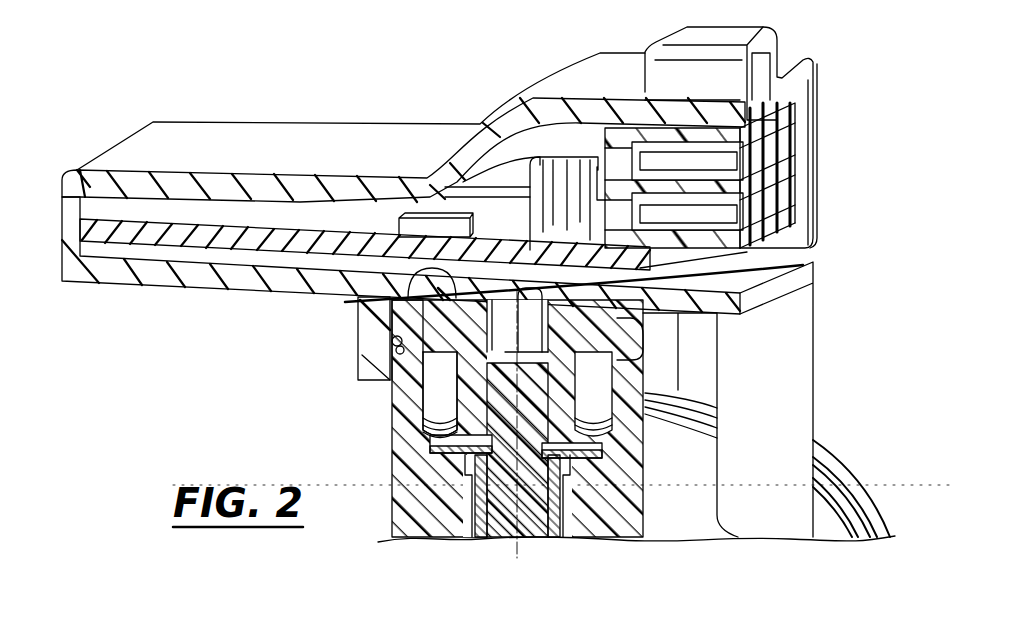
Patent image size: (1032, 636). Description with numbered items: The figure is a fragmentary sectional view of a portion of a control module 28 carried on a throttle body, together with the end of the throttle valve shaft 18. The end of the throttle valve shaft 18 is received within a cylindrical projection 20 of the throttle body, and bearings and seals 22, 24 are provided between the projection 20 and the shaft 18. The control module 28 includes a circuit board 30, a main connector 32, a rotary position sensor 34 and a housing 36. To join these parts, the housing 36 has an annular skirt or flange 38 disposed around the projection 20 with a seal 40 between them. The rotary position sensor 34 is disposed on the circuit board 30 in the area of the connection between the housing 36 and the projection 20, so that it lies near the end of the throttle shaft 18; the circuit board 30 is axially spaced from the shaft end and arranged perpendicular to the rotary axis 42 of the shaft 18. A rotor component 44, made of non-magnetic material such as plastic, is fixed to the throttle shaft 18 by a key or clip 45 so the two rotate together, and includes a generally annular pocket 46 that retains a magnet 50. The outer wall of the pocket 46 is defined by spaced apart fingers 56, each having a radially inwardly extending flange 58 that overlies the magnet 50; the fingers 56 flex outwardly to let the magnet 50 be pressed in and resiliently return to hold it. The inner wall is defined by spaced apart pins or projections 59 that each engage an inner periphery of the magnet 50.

The throttle valve shaft 18 is at (532, 532).
The cylindrical projection 20 is at (400, 425).
The bearing and seal 22 is at (462, 537).
The bearing and seal 24 is at (613, 535).
The control module 28 is at (272, 113).
The circuit board 30 is at (170, 235).
The main connector 32 is at (791, 113).
The rotary position sensor 34 is at (428, 232).
The housing 36 is at (72, 222).
The annular skirt or flange 38 is at (362, 350).
The seal 40 is at (390, 345).
The rotary axis 42 is at (513, 548).
The rotor component 44 is at (462, 400).
The key or clip 45 is at (640, 453).
The pocket 46 is at (440, 315).
The magnet 50 is at (612, 354).
The fingers 56 is at (618, 336).
The radially inwardly extending flange 58 is at (453, 268).
The pins or projections 59 is at (803, 265).